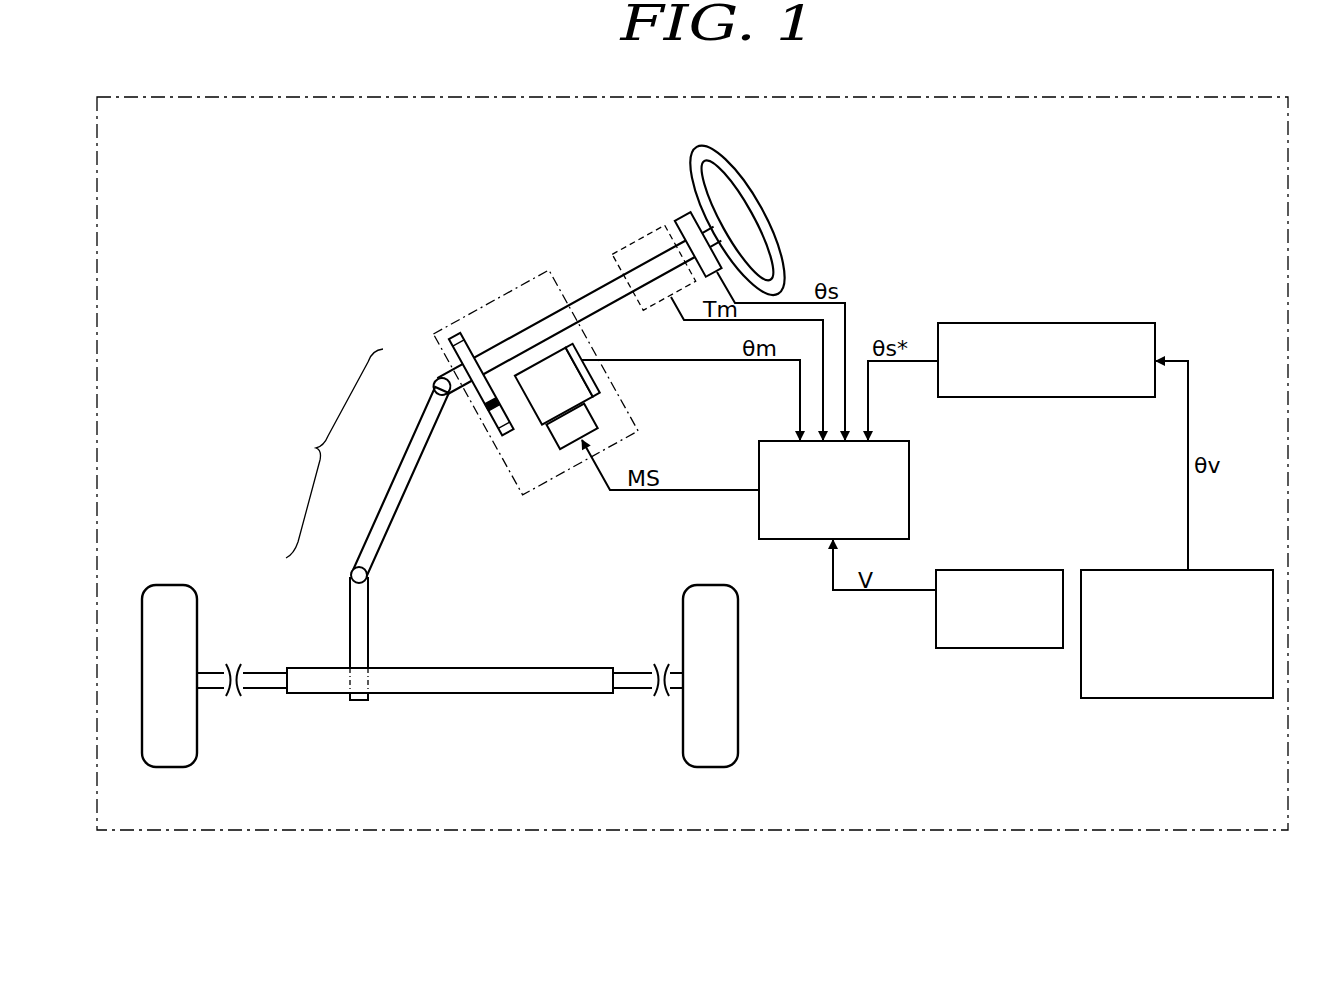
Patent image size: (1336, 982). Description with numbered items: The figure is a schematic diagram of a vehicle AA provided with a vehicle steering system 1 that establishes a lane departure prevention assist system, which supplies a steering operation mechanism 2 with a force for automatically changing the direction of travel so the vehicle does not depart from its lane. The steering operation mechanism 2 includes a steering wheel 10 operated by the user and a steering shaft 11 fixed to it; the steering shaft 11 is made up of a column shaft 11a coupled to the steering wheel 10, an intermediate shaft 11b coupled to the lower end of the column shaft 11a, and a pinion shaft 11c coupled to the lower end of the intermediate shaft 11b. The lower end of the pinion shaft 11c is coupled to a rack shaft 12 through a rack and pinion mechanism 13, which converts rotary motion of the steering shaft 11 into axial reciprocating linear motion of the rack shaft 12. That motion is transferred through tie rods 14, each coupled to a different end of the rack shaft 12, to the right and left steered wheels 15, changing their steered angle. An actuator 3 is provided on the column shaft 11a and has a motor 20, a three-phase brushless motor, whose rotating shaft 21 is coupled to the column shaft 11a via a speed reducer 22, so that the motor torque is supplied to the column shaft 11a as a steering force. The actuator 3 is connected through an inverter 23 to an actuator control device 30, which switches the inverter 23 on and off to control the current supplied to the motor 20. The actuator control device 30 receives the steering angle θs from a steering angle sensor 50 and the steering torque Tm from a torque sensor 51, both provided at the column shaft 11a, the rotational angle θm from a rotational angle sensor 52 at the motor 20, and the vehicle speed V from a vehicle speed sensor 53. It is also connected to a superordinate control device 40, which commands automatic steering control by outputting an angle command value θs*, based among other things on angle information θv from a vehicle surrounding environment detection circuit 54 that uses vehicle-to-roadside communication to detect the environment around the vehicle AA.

The vehicle steering system 1 is at (244, 158).
The steering operation mechanism 2 is at (251, 368).
The actuator 3 is at (486, 298).
The steering wheel 10 is at (762, 204).
The steering shaft 11 is at (333, 453).
The column shaft 11a is at (438, 383).
The intermediate shaft 11b is at (394, 445).
The pinion shaft 11c is at (352, 578).
The rack shaft 12 is at (453, 694).
The rack and pinion mechanism 13 is at (333, 648).
The tie rod 14 is at (264, 691).
The steered wheel 15 is at (173, 768).
The motor 20 is at (546, 423).
The rotating shaft 21 is at (514, 424).
The speed reducer 22 is at (488, 426).
The inverter 23 is at (596, 414).
The actuator control device 30 is at (778, 441).
The superordinate control device 40 is at (1130, 323).
The steering angle sensor 50 is at (690, 217).
The torque sensor 51 is at (641, 247).
The rotational angle sensor 52 is at (598, 389).
The vehicle speed sensor 53 is at (1043, 570).
The vehicle surrounding environment detection circuit 54 is at (1251, 570).
The vehicle AA is at (1140, 97).